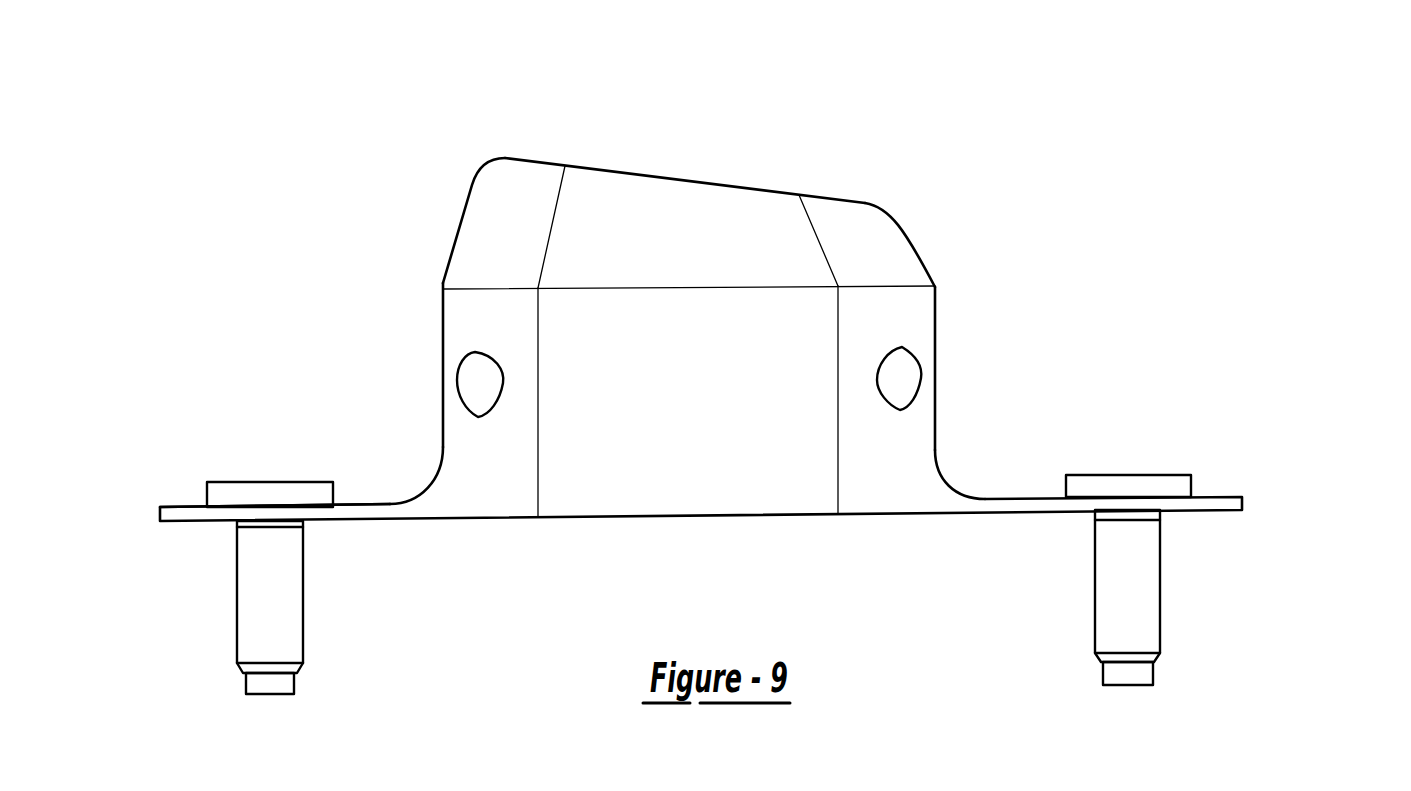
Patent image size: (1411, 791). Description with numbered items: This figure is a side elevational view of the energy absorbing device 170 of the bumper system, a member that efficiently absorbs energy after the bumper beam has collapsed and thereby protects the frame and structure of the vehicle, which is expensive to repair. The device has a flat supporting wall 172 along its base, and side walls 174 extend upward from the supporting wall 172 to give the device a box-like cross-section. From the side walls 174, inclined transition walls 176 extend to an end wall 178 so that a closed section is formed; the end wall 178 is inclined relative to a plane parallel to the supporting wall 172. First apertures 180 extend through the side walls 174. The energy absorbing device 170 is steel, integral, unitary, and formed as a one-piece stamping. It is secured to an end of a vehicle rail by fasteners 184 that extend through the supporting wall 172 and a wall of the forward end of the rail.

The energy absorbing device 170 is at (1242, 503).
The supporting wall 172 is at (360, 512).
The side walls 174 is at (910, 430).
The inclined transition walls 176 is at (664, 215).
The end wall 178 is at (745, 186).
The first apertures 180 is at (468, 368).
The fasteners 184 is at (257, 592).